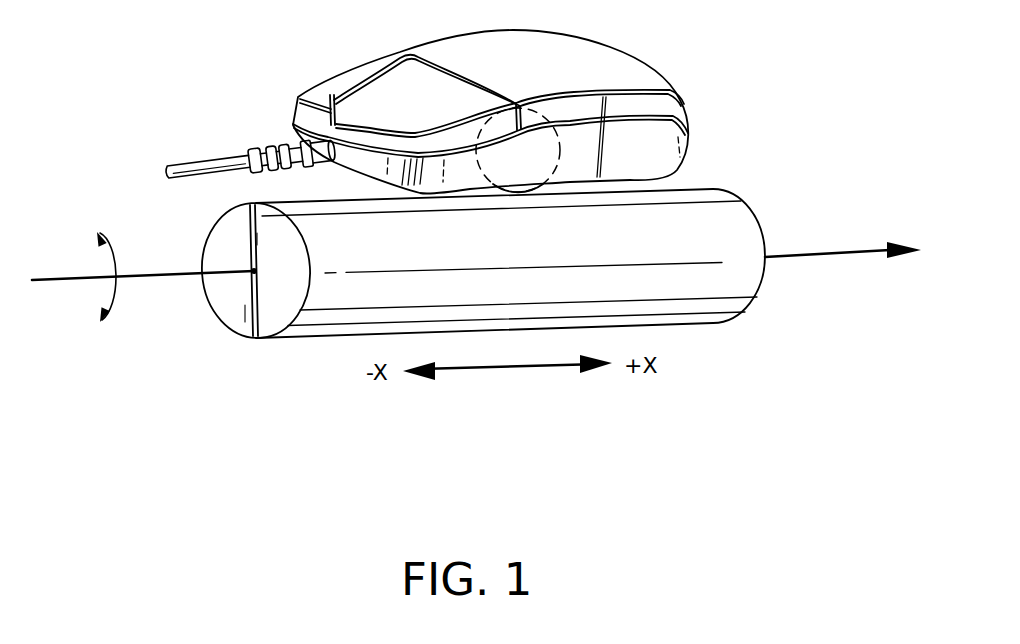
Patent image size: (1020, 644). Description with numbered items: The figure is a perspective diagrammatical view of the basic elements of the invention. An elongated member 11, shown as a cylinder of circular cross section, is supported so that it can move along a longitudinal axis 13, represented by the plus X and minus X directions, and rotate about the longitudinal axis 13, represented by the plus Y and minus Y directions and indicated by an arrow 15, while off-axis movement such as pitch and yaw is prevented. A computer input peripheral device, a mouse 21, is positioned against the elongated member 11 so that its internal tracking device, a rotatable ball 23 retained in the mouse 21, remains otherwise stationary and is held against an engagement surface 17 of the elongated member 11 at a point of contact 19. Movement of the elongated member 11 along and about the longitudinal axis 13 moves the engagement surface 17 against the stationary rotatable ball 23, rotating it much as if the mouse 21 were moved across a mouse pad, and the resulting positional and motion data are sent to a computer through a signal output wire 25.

The elongated member 11 is at (262, 338).
The longitudinal axis 13 is at (808, 249).
The arrow 15 is at (120, 262).
The engagement surface 17 is at (743, 225).
The point of contact 19 is at (523, 203).
The mouse 21 is at (603, 40).
The rotatable ball 23 is at (487, 119).
The signal output wire 25 is at (219, 159).